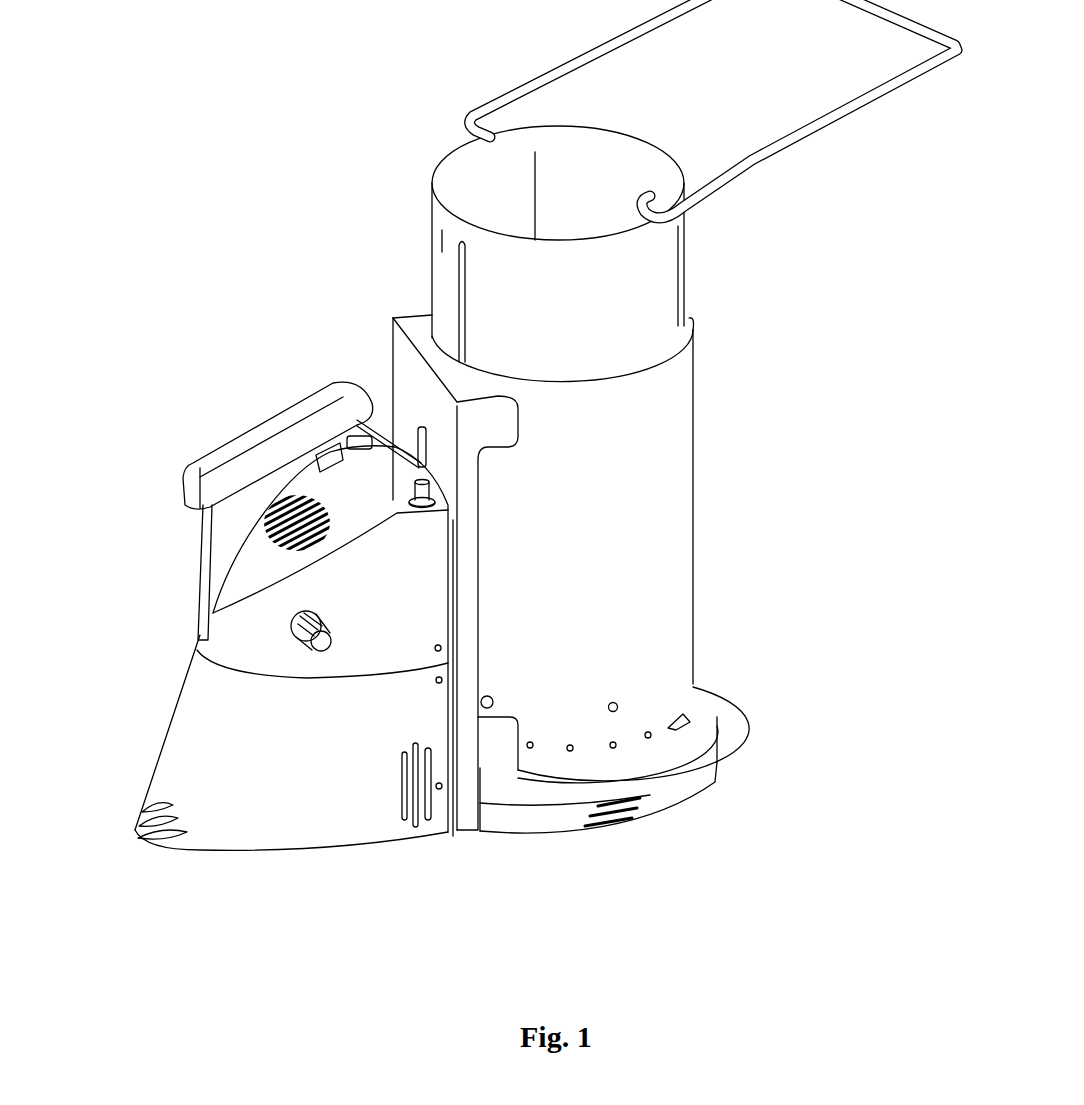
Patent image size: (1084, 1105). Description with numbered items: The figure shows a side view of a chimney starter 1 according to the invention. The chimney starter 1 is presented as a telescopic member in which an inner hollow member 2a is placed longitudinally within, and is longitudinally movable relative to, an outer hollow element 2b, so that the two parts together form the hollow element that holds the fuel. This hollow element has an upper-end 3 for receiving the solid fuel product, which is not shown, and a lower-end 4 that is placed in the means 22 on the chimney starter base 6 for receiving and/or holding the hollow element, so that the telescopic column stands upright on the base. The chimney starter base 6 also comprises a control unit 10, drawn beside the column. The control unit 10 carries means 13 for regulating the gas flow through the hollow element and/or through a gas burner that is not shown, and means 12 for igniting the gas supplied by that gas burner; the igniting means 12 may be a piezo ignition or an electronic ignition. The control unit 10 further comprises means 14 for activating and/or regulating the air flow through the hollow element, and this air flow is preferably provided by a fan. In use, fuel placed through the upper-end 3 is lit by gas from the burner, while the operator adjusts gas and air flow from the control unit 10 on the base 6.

The chimney starter 1 is at (334, 31).
The inner hollow member 2a is at (682, 248).
The outer hollow element 2b is at (691, 510).
The upper-end 3 is at (433, 178).
The lower-end 4 is at (684, 693).
The chimney starter base 6 is at (649, 773).
The control unit 10 is at (136, 743).
The means for igniting the gas 12 is at (381, 490).
The means for regulating the gas flow 13 is at (271, 645).
The means for activating and/or regulating the air flow 14 is at (336, 432).
The means for receiving and/or holding the hollow element 22 is at (498, 756).